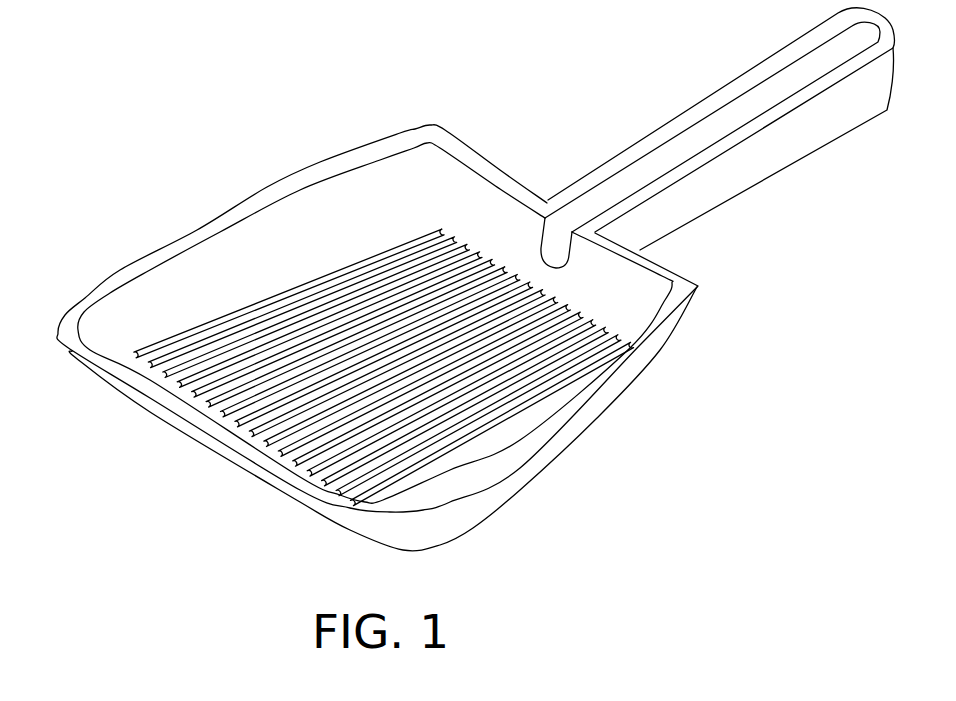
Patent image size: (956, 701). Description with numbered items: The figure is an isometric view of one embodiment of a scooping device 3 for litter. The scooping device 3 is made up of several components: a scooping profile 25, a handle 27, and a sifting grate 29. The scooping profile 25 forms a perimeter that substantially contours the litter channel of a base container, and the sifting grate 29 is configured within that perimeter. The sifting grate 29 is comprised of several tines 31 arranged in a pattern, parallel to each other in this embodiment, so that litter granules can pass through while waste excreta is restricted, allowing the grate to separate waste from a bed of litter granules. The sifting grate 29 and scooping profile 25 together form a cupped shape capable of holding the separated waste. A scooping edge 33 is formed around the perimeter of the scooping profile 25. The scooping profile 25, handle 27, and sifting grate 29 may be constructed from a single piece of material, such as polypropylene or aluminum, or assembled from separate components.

The scooping device 3 is at (452, 279).
The scooping profile 25 is at (497, 486).
The handle 27 is at (670, 127).
The sifting grate 29 is at (333, 272).
The tines 31 is at (443, 276).
The scooping edge 33 is at (57, 318).